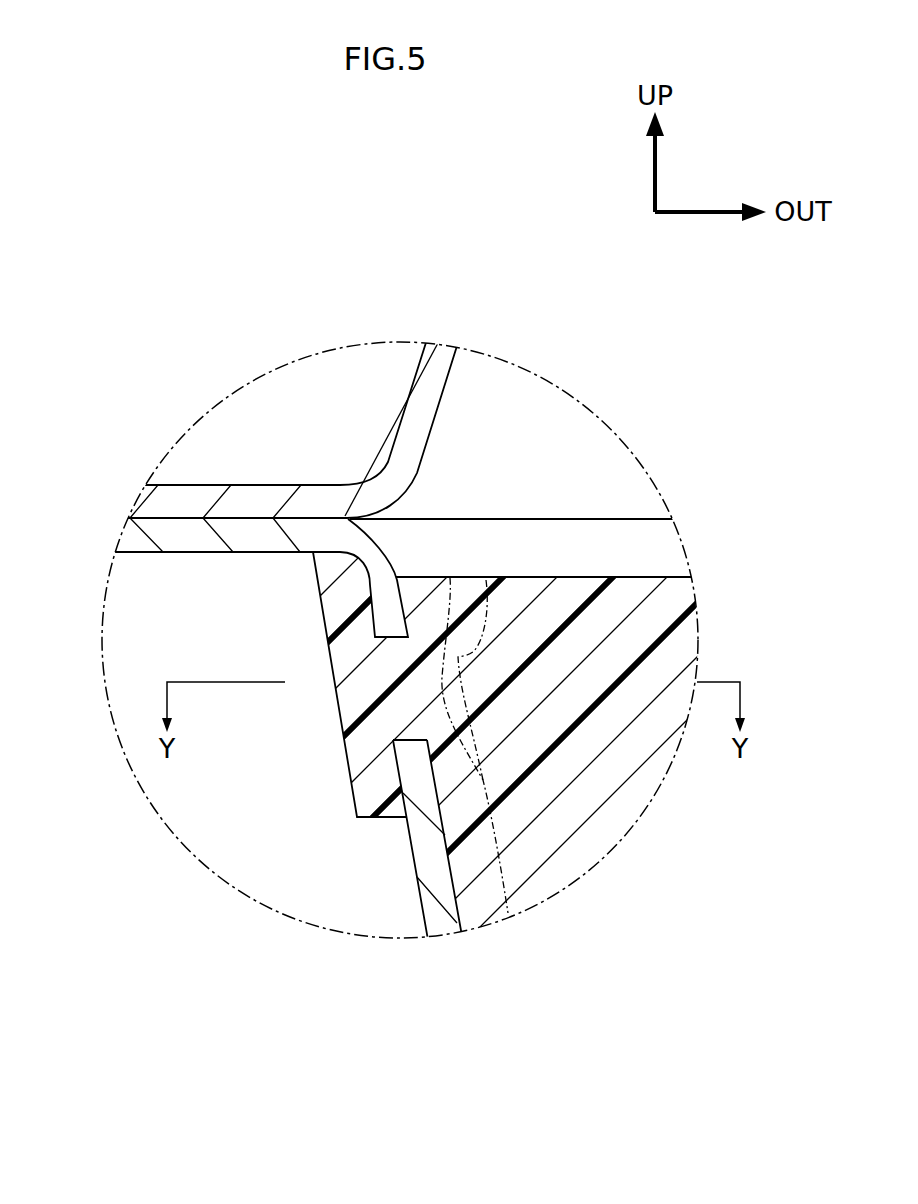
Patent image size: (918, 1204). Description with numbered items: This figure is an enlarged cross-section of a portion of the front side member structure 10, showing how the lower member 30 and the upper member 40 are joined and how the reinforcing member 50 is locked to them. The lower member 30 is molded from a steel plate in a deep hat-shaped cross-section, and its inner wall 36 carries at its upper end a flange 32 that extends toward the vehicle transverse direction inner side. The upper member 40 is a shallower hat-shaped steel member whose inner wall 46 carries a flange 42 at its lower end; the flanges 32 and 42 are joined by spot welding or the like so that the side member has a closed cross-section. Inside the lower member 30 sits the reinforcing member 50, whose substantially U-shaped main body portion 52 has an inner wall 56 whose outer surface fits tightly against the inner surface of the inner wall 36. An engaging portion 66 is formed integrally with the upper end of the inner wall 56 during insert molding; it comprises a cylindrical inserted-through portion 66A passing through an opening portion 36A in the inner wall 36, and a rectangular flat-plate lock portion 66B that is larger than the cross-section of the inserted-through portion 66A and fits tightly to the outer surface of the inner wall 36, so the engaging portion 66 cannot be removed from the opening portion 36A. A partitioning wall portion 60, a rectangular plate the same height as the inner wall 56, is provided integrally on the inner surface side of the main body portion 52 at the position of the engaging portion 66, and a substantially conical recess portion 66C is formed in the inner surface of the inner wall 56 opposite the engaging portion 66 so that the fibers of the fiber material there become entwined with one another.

The vehicle side structure 10 is at (230, 905).
The lower member 30 is at (367, 871).
The flange 32 is at (172, 540).
The inner wall 36 is at (367, 840).
The opening portion 36A is at (400, 742).
The upper member 40 is at (404, 377).
The flange 42 is at (275, 384).
The inner wall 46 is at (394, 430).
The reinforcing member 50 is at (459, 616).
The main body portion 52 is at (510, 969).
The inner wall 56 is at (482, 905).
The partitioning wall portion 60 is at (531, 588).
The engaging portion 66 is at (373, 664).
The inserted-through portion 66A is at (408, 710).
The lock portion 66B is at (333, 615).
The recess portion 66C is at (486, 580).